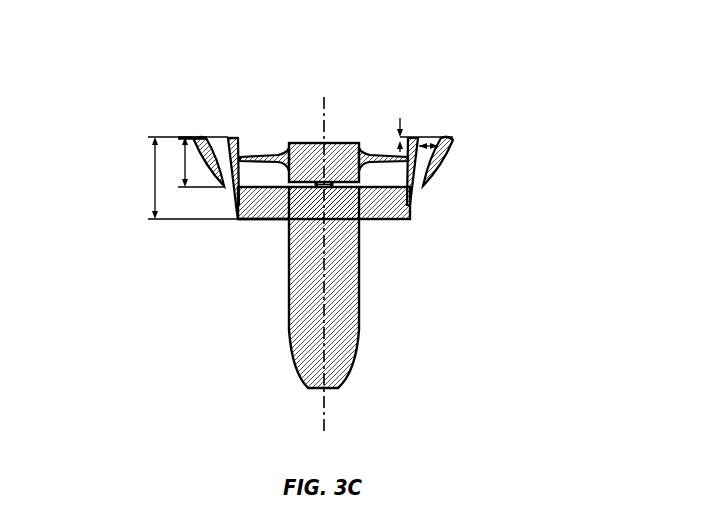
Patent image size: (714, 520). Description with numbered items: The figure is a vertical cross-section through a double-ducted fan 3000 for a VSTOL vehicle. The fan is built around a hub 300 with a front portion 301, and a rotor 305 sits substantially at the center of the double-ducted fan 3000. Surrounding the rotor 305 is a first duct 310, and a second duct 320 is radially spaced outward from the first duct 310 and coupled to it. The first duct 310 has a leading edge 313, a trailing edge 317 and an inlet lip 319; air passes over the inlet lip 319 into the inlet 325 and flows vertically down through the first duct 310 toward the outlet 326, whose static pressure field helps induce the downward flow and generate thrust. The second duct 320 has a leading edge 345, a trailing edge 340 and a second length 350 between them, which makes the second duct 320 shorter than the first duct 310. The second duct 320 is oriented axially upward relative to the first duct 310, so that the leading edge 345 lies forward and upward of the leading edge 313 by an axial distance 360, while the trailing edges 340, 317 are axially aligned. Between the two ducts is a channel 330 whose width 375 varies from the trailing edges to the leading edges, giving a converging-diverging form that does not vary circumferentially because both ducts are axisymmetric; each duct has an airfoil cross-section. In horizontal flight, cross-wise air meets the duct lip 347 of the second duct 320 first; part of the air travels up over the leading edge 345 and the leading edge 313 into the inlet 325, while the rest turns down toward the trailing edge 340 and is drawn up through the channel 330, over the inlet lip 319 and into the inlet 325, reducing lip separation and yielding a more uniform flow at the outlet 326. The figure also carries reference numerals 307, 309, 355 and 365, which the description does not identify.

The hub 300 is at (345, 290).
The front portion 301 is at (318, 183).
The rotor 305 is at (340, 152).
The flange 307 is at (280, 155).
The base 309 is at (376, 206).
The first duct 310 is at (420, 193).
The leading edge 313 is at (228, 137).
The trailing edge 317 is at (236, 223).
The inlet lip 319 is at (237, 137).
The second duct 320 is at (447, 156).
The inlet 325 is at (266, 132).
The outlet 326 is at (260, 230).
The channel 330 is at (430, 173).
The trailing edge 340 is at (204, 164).
The leading edge 345 is at (198, 139).
The duct lip 347 is at (457, 145).
The second length 350 is at (183, 162).
The side wall height 355 is at (155, 183).
The axial distance 360 is at (399, 122).
The central axis 365 is at (325, 410).
The width 375 is at (428, 143).
The double-ducted fan 3000 is at (296, 237).